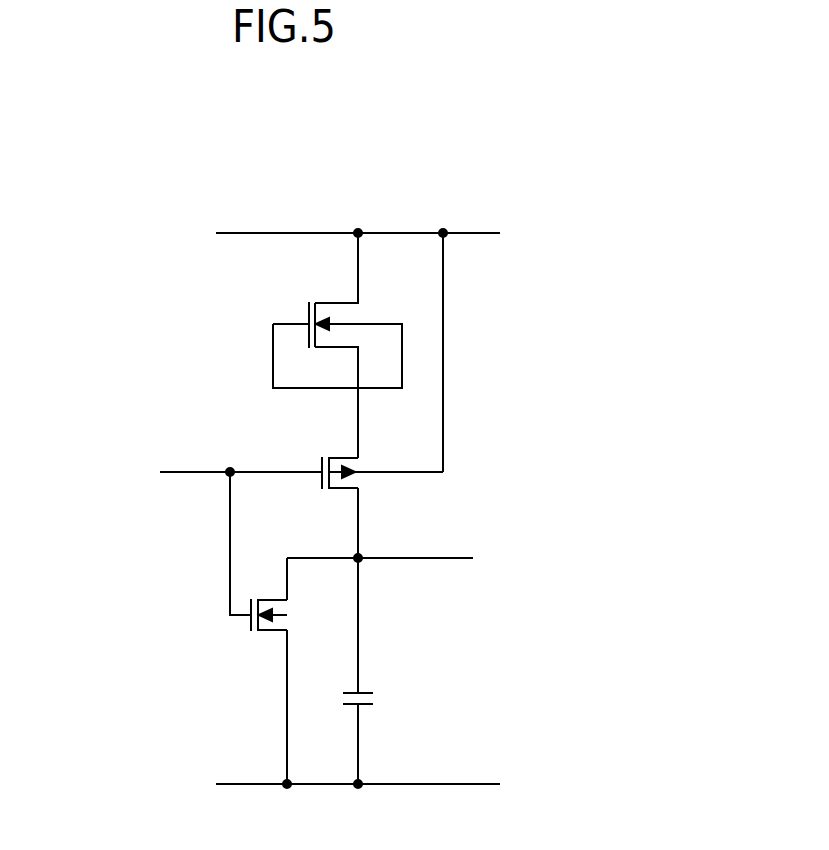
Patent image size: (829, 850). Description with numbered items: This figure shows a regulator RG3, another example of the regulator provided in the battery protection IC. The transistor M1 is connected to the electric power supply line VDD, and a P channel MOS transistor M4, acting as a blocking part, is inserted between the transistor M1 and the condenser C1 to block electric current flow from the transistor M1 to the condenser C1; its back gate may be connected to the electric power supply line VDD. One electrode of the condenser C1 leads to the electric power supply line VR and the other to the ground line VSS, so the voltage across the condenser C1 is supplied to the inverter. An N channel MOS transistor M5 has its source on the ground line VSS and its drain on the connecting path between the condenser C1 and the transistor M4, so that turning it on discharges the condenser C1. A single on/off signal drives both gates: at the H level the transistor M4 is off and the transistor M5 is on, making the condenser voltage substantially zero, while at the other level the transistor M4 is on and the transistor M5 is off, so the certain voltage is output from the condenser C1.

The regulator RG3 is at (143, 177).
The transistor M1 is at (335, 334).
The P channel MOS transistor M4 is at (366, 461).
The N channel MOS transistor M5 is at (252, 630).
The condenser C1 is at (339, 699).
The electric power supply line VDD is at (326, 234).
The ground line VSS is at (326, 784).
The electric power supply line VR is at (399, 560).